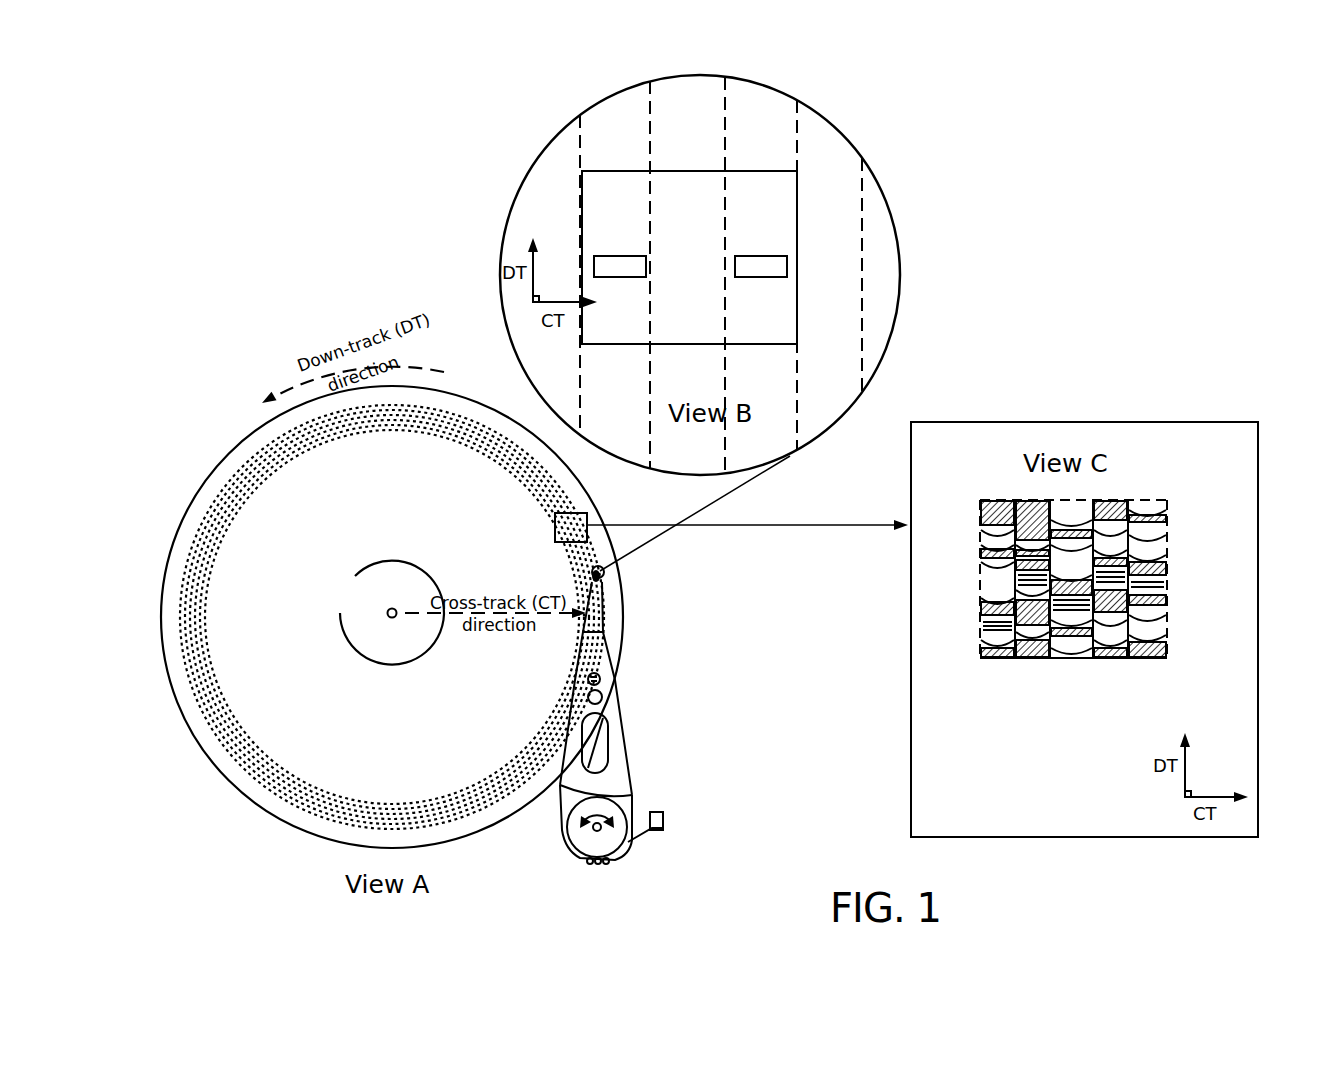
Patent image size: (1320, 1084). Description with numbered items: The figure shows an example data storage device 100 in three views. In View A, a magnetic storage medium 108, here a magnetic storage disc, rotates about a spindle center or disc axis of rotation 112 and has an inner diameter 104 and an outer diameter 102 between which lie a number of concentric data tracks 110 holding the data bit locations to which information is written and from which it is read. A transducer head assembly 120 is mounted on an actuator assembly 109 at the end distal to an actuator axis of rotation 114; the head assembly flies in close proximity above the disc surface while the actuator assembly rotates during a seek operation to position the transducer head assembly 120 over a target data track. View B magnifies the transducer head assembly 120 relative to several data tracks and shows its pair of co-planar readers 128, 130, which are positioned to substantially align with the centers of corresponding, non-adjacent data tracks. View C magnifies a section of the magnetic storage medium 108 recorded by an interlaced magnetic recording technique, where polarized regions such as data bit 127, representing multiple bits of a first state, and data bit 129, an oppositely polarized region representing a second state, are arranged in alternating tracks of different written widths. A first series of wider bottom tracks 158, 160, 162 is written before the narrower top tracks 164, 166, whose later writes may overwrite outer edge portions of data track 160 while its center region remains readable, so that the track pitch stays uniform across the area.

The data storage device 100 is at (297, 169).
The outer diameter 102 is at (234, 449).
The inner diameter 104 is at (341, 615).
The magnetic storage medium 108 is at (255, 805).
The actuator assembly 109 is at (620, 700).
The data tracks 110 is at (213, 733).
The spindle center or disc axis of rotation 112 is at (378, 606).
The actuator axis of rotation 114 is at (592, 826).
The transducer head assembly 120 is at (604, 576).
The data bit 127 is at (992, 537).
The reader 128 is at (620, 267).
The data bit 129 is at (985, 567).
The reader 130 is at (761, 267).
The data track 158 is at (998, 675).
The data track 160 is at (1068, 675).
The data track 162 is at (1149, 675).
The data track 164 is at (1028, 675).
The data track 166 is at (1116, 675).